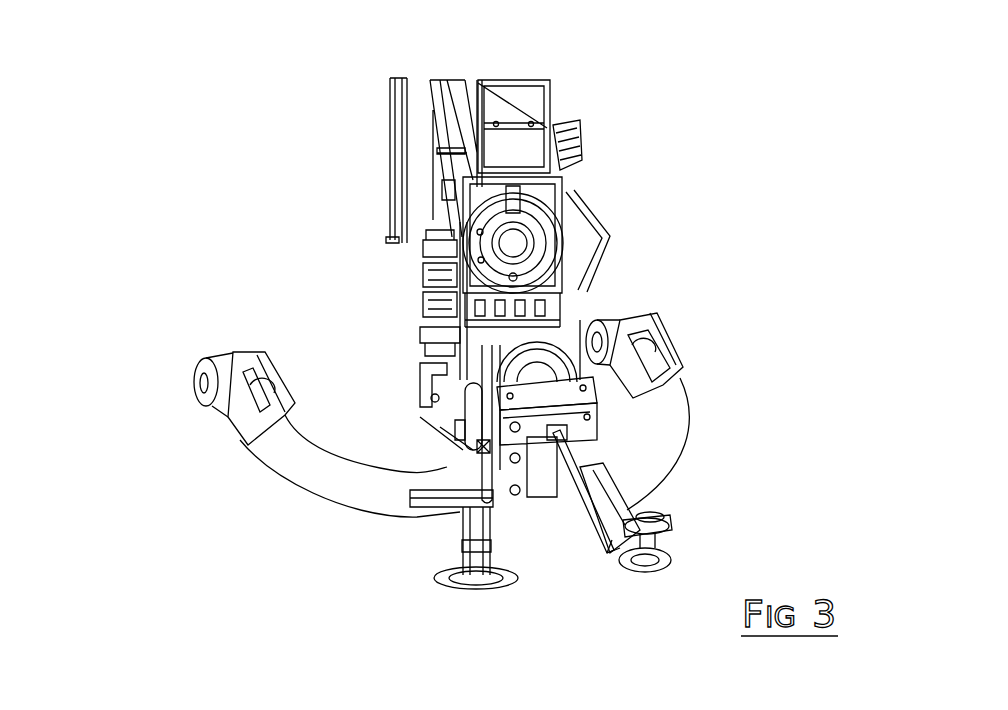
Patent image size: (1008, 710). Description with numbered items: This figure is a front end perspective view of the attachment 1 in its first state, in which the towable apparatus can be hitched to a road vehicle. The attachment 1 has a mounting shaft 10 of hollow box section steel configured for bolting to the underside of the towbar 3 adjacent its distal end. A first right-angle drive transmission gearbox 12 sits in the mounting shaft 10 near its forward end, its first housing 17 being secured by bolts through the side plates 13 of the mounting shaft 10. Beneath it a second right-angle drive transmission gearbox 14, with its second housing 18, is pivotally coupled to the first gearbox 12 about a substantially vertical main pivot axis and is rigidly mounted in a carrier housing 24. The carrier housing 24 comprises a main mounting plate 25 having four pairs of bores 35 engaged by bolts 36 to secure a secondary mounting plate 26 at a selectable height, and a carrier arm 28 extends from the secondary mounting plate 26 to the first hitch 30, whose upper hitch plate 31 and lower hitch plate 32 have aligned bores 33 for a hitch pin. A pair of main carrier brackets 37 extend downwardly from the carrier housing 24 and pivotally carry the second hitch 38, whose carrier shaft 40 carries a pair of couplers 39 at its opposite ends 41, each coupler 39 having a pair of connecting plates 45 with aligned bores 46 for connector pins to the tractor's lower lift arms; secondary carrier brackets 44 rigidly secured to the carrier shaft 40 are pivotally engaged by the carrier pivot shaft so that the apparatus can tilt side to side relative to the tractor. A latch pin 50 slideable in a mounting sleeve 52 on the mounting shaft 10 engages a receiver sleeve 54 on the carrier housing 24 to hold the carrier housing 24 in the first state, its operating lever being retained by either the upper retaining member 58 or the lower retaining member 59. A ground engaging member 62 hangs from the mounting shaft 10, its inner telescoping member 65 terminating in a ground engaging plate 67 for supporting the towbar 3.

The attachment 1 is at (706, 180).
The towbar 3 is at (548, 110).
The mounting shaft 10 is at (437, 153).
The first right-angle drive transmission gearbox 12 is at (572, 190).
The side plates 13 is at (440, 148).
The second right-angle drive transmission gearbox 14 is at (585, 335).
The first housing 17 is at (580, 150).
The second housing 18 is at (582, 268).
The carrier housing 24 is at (424, 364).
The main mounting plate 25 is at (575, 423).
The secondary mounting plate 26 is at (518, 497).
The carrier arm 28 is at (590, 455).
The first hitch 30 is at (667, 522).
The upper hitch plate 31 is at (667, 514).
The lower hitch plate 32 is at (622, 556).
The aligned bores 33 is at (633, 548).
The bores 35 is at (547, 393).
The bolts 36 is at (597, 412).
The main carrier brackets 37 is at (432, 412).
The second hitch 38 is at (186, 494).
The couplers 39 is at (655, 318).
The carrier shaft 40 is at (463, 493).
The opposite ends 41 is at (657, 357).
The secondary carrier brackets 44 is at (450, 463).
The connecting plates 45 is at (604, 322).
The aligned bores 46 is at (603, 315).
The latch pin 50 is at (421, 232).
The mounting sleeve 52 is at (424, 266).
The receiver sleeve 54 is at (427, 330).
The upper retaining member 58 is at (437, 153).
The lower retaining member 59 is at (440, 195).
The ground engaging member 62 is at (463, 533).
The inner telescoping member 65 is at (462, 575).
The ground engaging plate 67 is at (473, 587).